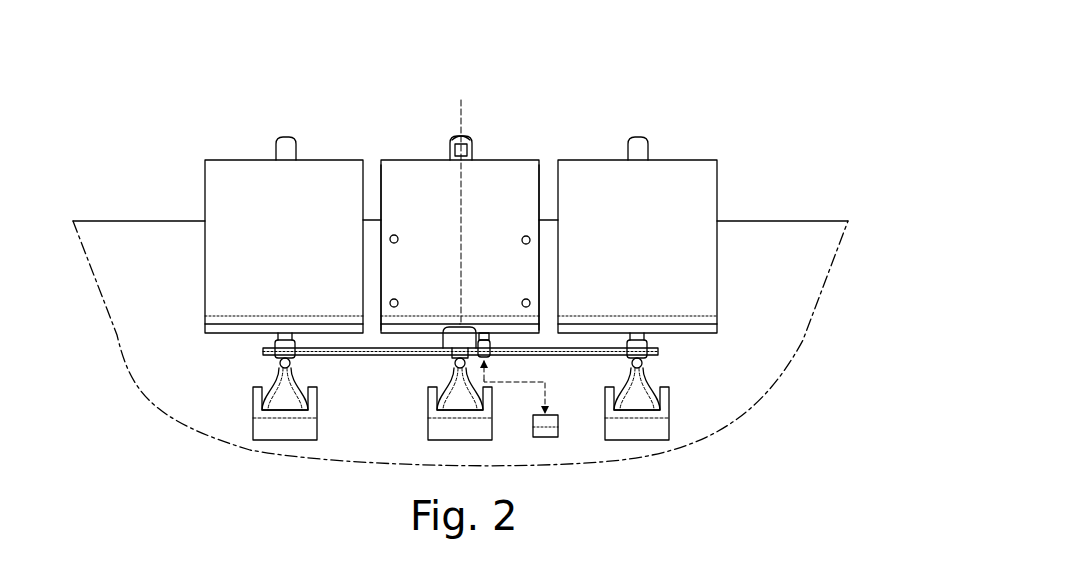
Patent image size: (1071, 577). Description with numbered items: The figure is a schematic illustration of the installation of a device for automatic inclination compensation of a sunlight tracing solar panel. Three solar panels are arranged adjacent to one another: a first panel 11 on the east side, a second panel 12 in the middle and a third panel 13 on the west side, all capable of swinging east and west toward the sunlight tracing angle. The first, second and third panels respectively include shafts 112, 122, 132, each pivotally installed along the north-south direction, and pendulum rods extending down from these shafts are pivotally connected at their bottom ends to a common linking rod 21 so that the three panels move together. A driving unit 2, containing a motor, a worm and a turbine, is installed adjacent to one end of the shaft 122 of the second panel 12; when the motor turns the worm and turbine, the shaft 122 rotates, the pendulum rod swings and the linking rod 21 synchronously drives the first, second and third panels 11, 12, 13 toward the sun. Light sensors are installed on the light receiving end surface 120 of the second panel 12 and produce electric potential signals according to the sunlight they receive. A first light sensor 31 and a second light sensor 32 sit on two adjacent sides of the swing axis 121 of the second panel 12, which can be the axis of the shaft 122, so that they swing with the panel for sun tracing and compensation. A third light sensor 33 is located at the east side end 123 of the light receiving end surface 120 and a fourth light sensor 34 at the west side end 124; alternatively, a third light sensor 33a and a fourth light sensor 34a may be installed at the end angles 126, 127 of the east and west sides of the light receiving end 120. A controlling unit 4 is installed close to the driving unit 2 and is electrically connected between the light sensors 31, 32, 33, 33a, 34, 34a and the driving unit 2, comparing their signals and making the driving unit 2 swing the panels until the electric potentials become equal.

The driving unit 2 is at (443, 357).
The controlling unit 4 is at (548, 432).
The first panel 11 is at (718, 258).
The second panel 12 is at (518, 160).
The third panel 13 is at (204, 205).
The linking rod 21 is at (325, 355).
The first light sensor 31 is at (472, 148).
The second light sensor 32 is at (452, 147).
The third light sensor 33 is at (531, 240).
The third light sensor 33a is at (531, 303).
The fourth light sensor 34 is at (389, 238).
The fourth light sensor 34a is at (389, 303).
The shaft 112 is at (642, 148).
The light receiving end surface 120 is at (412, 185).
The swing axis 121 is at (463, 112).
The shaft 122 is at (458, 135).
The east side end 123 is at (527, 265).
The west side end 124 is at (398, 268).
The end angle 126 is at (540, 318).
The end angle 127 is at (387, 316).
The shaft 132 is at (283, 150).